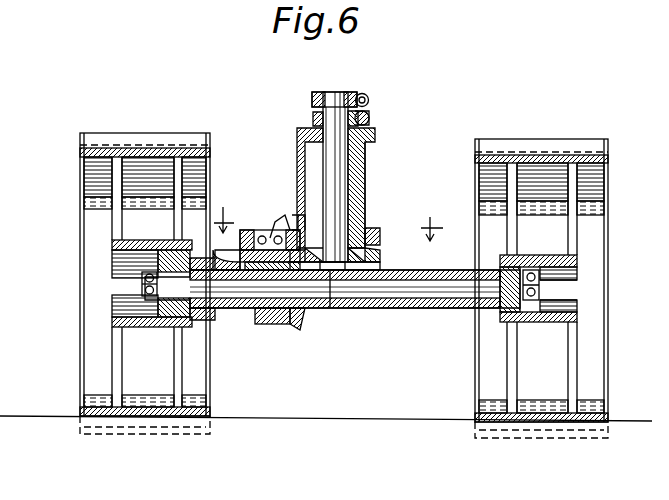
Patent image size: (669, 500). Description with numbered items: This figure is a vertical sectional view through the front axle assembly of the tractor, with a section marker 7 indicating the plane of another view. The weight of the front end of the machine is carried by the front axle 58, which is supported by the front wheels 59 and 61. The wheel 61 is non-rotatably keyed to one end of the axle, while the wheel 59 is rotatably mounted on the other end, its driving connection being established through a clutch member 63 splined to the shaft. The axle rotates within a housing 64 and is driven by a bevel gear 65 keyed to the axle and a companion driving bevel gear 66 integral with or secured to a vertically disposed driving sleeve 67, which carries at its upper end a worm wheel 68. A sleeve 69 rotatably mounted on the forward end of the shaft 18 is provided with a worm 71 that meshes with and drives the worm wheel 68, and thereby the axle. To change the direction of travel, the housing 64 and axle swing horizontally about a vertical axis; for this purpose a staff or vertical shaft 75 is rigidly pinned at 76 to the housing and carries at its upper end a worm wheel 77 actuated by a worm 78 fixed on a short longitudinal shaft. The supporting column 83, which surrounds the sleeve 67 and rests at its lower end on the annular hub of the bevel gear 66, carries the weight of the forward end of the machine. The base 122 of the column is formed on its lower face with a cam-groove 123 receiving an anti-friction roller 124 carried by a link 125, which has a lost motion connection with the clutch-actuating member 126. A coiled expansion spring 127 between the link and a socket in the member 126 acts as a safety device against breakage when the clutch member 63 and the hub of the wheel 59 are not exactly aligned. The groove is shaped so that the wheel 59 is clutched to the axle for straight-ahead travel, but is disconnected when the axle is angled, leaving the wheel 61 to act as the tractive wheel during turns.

The front wheel 59 is at (143, 150).
The front wheel 61 is at (540, 156).
The front axle 58 is at (371, 299).
The housing 64 is at (426, 302).
The pin 76 is at (328, 300).
The clutch member 63 is at (214, 312).
The bevel gear 65 is at (280, 310).
The driving bevel gear 66 is at (372, 258).
The driving sleeve 67 is at (351, 175).
The supporting column 83 is at (367, 198).
The cam-groove 123 is at (378, 232).
The vertical shaft 75 is at (336, 182).
The worm wheel 77 is at (318, 94).
The worm 78 is at (364, 94).
The worm 71 is at (369, 114).
The shaft 18 is at (370, 120).
The sleeve 69 is at (370, 127).
The worm wheel 68 is at (312, 117).
The anti-friction roller 124 is at (270, 200).
The link 125 is at (270, 218).
The base 122 is at (300, 216).
The coiled expansion spring 127 is at (274, 236).
The clutch-actuating member 126 is at (240, 256).
The section line 7 is at (328, 223).